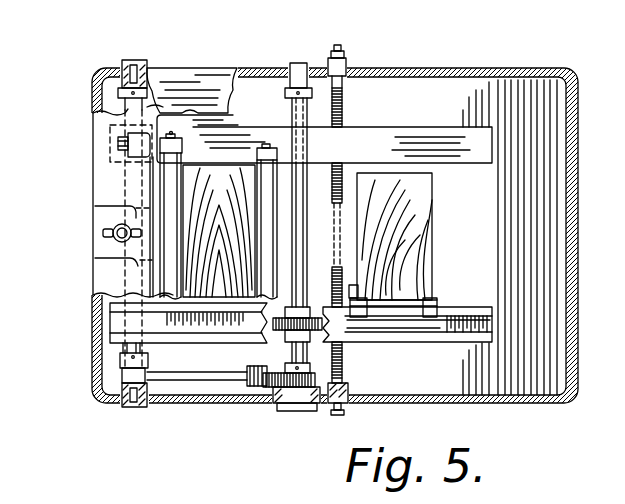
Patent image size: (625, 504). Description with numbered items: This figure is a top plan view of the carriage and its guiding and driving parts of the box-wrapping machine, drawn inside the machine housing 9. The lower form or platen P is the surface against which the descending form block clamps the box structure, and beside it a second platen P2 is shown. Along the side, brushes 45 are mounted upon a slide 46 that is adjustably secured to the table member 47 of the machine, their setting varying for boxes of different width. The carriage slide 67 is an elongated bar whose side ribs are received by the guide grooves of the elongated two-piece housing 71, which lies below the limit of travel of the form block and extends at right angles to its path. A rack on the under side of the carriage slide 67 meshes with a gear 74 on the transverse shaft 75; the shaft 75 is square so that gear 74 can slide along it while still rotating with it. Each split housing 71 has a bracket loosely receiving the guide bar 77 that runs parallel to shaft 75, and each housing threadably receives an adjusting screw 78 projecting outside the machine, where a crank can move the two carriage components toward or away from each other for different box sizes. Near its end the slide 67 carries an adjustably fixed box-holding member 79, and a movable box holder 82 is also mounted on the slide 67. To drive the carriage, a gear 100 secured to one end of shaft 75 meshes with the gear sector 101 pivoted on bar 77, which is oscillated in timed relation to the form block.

The housing 9 is at (402, 67).
The guide bar 77 is at (97, 108).
The table member 47 is at (102, 183).
The slide 46 is at (107, 217).
The brush 45 is at (180, 158).
The two-piece housing 71 is at (370, 137).
The carriage slide 67 is at (402, 323).
The box-holding member 79 is at (440, 306).
The movable box holder 82 is at (350, 290).
The lower form P is at (250, 222).
The second plate P2 is at (428, 226).
The shaft 75 is at (305, 108).
The gear 74 is at (283, 331).
The gear 100 is at (317, 382).
The gear sector 101 is at (197, 378).
The adjusting screw 78 is at (343, 107).